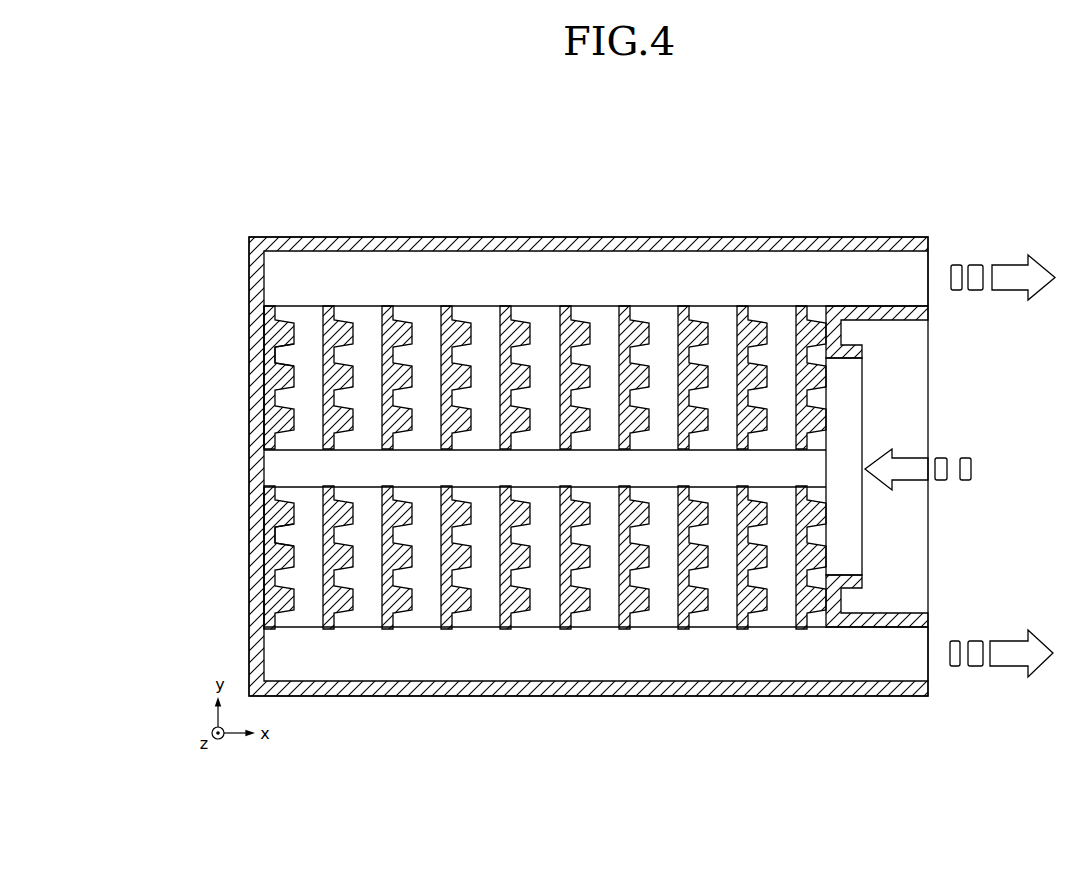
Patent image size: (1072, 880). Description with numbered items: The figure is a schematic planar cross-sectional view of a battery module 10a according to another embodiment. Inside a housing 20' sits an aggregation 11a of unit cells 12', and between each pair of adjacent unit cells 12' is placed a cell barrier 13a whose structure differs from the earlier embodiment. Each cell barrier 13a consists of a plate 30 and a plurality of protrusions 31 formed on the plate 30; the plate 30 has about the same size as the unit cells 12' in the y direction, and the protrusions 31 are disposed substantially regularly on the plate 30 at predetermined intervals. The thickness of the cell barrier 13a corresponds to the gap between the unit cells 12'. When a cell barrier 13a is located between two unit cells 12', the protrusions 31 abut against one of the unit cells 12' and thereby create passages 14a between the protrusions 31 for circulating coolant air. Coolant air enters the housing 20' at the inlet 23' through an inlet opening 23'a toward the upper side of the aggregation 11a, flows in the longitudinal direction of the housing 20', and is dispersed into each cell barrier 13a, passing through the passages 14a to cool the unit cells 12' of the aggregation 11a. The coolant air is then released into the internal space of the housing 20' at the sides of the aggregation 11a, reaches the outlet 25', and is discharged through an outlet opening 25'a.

The battery module 10a is at (589, 148).
The housing 20' is at (588, 431).
The outlet 25' is at (588, 470).
The outlet opening 25'a is at (989, 468).
The aggregation 11a is at (555, 650).
The unit cell 12' is at (510, 467).
The plate 30 is at (268, 363).
The protrusion 31 is at (277, 328).
The passage 14a is at (282, 538).
The cell barrier 13a is at (268, 563).
The inlet 23' is at (898, 466).
The inlet opening 23'a is at (890, 466).